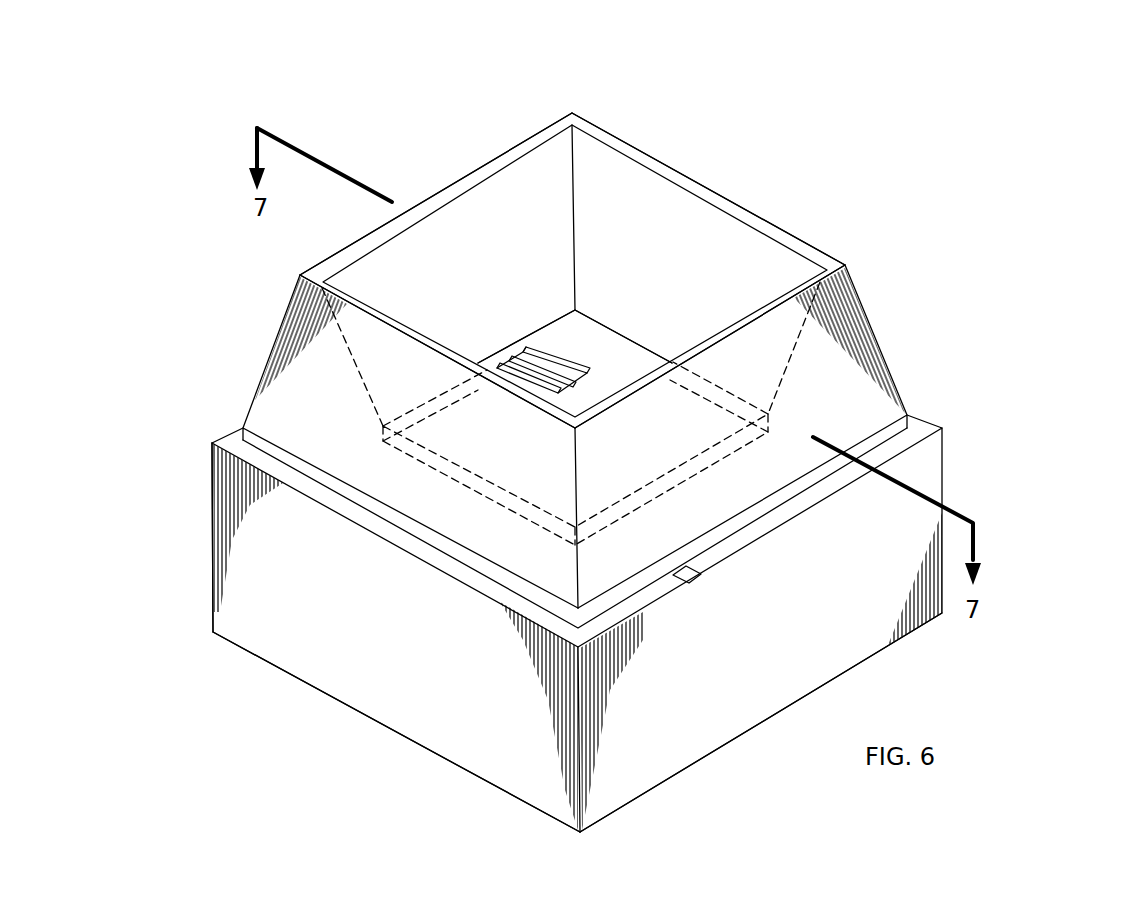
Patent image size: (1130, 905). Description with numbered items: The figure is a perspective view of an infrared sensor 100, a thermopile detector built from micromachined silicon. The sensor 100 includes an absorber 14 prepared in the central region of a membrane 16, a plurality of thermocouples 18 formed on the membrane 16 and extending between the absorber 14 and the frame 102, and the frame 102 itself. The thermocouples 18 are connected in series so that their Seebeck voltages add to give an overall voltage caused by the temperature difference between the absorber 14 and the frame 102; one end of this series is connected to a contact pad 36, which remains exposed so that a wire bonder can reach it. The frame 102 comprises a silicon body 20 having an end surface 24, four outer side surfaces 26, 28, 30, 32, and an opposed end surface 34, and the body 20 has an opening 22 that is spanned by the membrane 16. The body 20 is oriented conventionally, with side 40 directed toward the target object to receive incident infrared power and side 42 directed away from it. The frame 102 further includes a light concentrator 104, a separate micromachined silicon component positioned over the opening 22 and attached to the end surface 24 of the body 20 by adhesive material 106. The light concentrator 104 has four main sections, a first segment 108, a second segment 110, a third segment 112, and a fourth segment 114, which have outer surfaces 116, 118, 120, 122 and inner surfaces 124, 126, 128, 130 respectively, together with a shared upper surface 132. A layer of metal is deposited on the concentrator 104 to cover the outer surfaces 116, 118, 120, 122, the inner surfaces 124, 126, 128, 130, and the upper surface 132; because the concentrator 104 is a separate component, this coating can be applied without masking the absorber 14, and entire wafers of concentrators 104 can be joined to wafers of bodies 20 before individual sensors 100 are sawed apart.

The infrared sensor 100 is at (1023, 120).
The frame 102 is at (1005, 338).
The light concentrator 104 is at (829, 246).
The adhesive material 106 is at (805, 484).
The first segment 108 is at (710, 514).
The second segment 110 is at (648, 151).
The third segment 112 is at (453, 175).
The fourth segment 114 is at (350, 464).
The outer surface 116 is at (816, 411).
The outer surface 118 is at (703, 185).
The outer surface 120 is at (354, 243).
The outer surface 122 is at (296, 400).
The inner surface 124 is at (709, 336).
The inner surface 126 is at (764, 258).
The inner surface 128 is at (517, 183).
The inner surface 130 is at (336, 292).
The upper surface 132 is at (600, 130).
The absorber 14 is at (587, 398).
The membrane 16 is at (623, 362).
The thermocouples 18 is at (555, 345).
The body 20 is at (929, 476).
The opening 22 is at (593, 340).
The end surface 24 is at (233, 430).
The outer side surface 26 is at (500, 755).
The outer side surface 28 is at (650, 770).
The outer side surface 30 is at (905, 413).
The outer side surface 32 is at (209, 442).
The opposed end surface 34 is at (420, 743).
The pad 36 is at (697, 562).
The side 40 is at (805, 97).
The side 42 is at (252, 714).